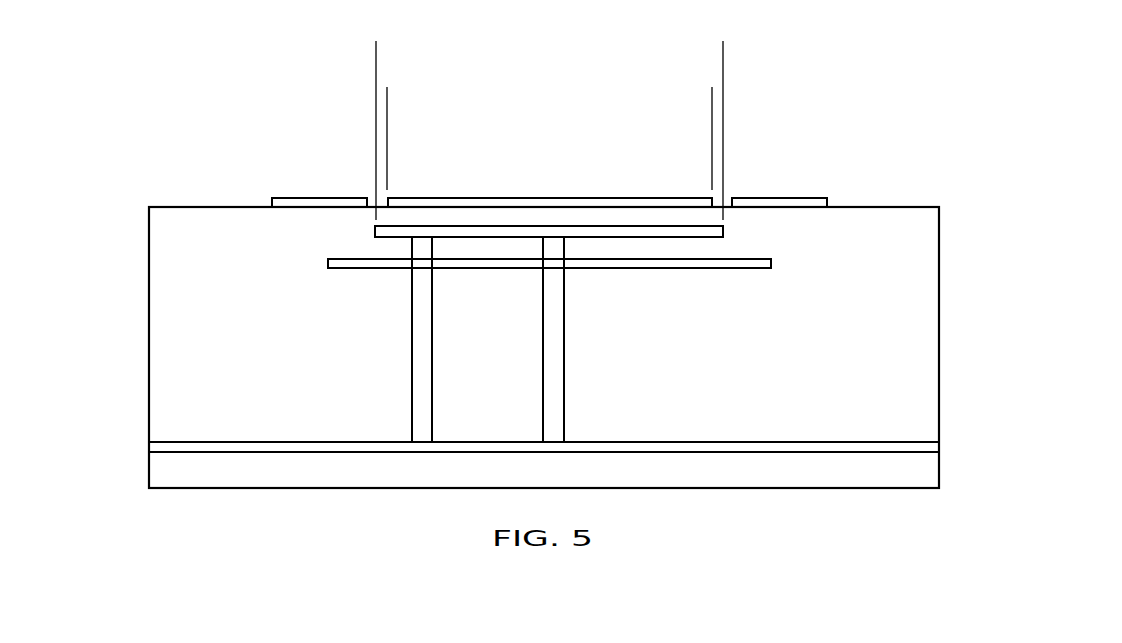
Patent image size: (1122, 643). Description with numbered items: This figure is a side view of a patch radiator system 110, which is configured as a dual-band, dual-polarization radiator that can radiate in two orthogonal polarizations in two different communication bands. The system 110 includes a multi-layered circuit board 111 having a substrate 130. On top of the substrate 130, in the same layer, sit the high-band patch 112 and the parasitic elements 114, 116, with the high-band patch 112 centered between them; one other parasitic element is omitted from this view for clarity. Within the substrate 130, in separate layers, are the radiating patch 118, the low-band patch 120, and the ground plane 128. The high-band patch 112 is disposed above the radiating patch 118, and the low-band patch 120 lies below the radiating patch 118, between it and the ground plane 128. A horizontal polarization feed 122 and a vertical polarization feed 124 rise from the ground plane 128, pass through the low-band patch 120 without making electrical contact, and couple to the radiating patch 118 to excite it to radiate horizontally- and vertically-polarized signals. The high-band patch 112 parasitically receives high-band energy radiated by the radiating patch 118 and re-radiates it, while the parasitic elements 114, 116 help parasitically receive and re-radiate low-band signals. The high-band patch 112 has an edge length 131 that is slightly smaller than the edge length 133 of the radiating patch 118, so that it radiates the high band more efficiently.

The patch radiator system 110 is at (812, 98).
The multi-layered circuit board 111 is at (168, 162).
The high-band patch 112 is at (565, 197).
The parasitic element 114 is at (310, 197).
The parasitic element 116 is at (763, 198).
The radiating patch 118 is at (723, 232).
The low-band patch 120 is at (328, 262).
The horizontal polarization feed 122 is at (433, 310).
The vertical polarization feed 124 is at (565, 310).
The ground plane 128 is at (292, 441).
The substrate 130 is at (872, 207).
The edge length 131 is at (712, 115).
The edge length 133 is at (723, 58).